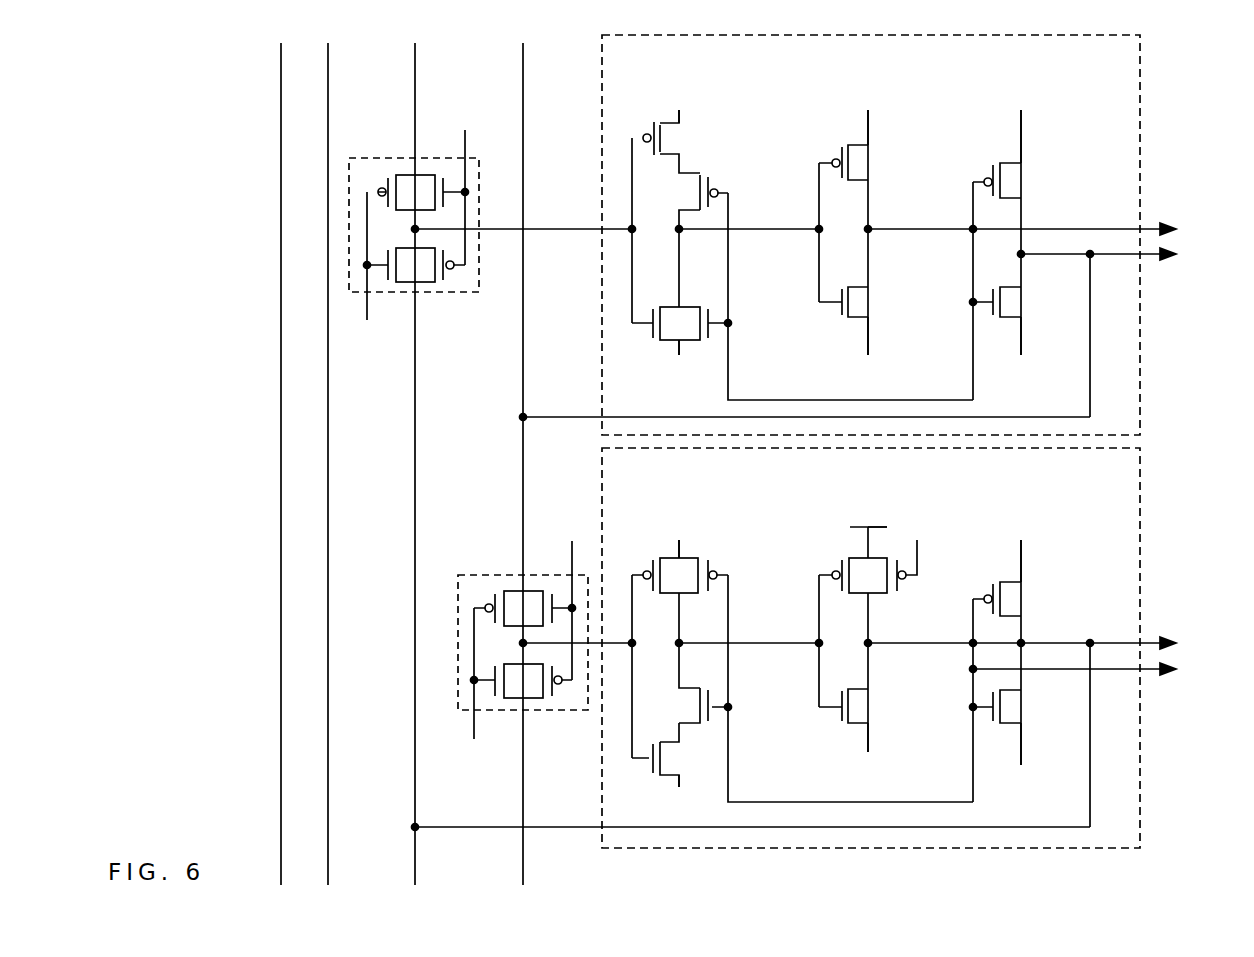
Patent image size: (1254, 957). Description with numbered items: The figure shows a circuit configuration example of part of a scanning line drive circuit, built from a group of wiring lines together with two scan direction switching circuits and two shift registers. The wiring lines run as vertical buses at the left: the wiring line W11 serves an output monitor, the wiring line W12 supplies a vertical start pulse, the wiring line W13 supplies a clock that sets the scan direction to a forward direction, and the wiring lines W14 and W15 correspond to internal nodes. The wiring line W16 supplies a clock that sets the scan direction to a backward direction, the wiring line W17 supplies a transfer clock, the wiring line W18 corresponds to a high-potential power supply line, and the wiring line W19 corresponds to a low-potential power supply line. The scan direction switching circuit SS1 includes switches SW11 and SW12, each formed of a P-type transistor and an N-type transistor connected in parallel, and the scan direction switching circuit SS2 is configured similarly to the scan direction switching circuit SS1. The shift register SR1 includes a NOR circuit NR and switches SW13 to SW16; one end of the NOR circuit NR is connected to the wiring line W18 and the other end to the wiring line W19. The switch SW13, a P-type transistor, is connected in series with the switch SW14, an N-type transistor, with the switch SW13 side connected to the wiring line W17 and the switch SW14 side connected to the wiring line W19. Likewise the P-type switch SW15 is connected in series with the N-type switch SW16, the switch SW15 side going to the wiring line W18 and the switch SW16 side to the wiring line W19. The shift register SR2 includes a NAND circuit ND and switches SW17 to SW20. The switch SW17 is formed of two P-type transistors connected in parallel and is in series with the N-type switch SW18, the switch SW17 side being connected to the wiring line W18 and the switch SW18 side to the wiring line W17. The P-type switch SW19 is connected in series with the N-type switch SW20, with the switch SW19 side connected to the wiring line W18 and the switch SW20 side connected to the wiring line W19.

The wiring line W11 is at (281, 410).
The wiring line W12 is at (328, 500).
The wiring line W13 is at (465, 130).
The wiring line W14 is at (415, 858).
The wiring line W15 is at (523, 342).
The wiring line W16 is at (367, 320).
The wiring line W17 is at (868, 424).
The wiring line W18 is at (850, 321).
The wiring line W19 is at (832, 567).
The scan direction switching circuit SS1 is at (436, 158).
The scan direction switching circuit SS2 is at (480, 575).
The shift register SR1 is at (1140, 338).
The shift register SR2 is at (1140, 535).
The NOR circuit NR is at (720, 163).
The NAND circuit ND is at (740, 585).
The switch SW11 is at (393, 167).
The switch SW12 is at (392, 240).
The switch SW13 is at (878, 158).
The switch SW14 is at (878, 298).
The switch SW15 is at (1030, 175).
The switch SW16 is at (1023, 300).
The switch SW17 is at (858, 600).
The switch SW18 is at (878, 707).
The switch SW19 is at (1030, 600).
The switch SW20 is at (1025, 707).